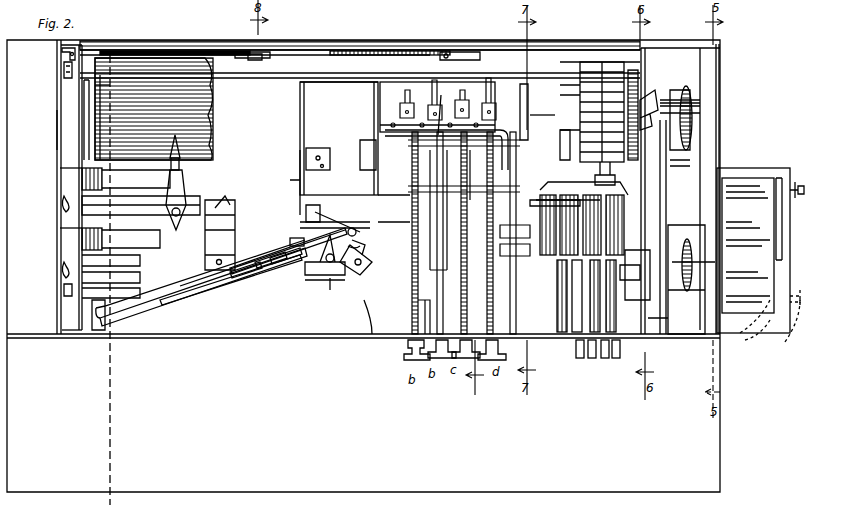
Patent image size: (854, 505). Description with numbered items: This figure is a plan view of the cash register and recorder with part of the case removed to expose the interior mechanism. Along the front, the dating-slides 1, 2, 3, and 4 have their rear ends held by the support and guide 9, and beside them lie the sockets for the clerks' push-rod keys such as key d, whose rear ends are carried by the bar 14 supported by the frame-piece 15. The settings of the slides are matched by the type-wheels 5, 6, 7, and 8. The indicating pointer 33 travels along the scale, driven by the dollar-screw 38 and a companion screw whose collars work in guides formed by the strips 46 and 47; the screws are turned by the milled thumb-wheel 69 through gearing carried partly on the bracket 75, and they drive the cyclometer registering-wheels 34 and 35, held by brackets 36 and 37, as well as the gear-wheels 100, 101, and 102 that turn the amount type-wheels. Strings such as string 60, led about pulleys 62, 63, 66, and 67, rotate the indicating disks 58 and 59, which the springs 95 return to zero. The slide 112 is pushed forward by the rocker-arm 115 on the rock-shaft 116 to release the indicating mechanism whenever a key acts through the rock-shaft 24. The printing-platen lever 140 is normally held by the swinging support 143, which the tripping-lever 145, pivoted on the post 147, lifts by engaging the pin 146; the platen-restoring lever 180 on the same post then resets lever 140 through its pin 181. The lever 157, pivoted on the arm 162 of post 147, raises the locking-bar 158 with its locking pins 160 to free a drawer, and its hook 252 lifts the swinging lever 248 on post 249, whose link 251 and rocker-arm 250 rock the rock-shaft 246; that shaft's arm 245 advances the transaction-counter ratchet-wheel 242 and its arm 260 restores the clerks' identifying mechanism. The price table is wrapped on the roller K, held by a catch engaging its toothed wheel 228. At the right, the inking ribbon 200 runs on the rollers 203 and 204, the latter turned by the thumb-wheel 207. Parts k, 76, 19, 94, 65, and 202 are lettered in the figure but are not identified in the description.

The pulley 67 is at (63, 50).
The pulley 62 is at (64, 60).
The string 60 is at (58, 127).
The roller K is at (213, 102).
The drum shaft k is at (77, 108).
The bracket 37 is at (104, 172).
The cent registering-wheels 35 is at (82, 175).
The pulley 66 is at (62, 208).
The bracket 36 is at (104, 235).
The dollar registering-wheels 34 is at (82, 240).
The strips 46 is at (130, 266).
The pulley 63 is at (63, 282).
The pointer 33 is at (178, 226).
The strips 47 is at (204, 198).
The tripping-lever 145 is at (180, 288).
The swinging lever 157 is at (220, 283).
The post 147 is at (240, 278).
The arm 162 is at (268, 262).
The platen-restoring lever 180 is at (250, 240).
The catch or hook 252 is at (296, 238).
The rocker-arm 250 is at (305, 112).
The post 249 is at (314, 150).
The support and guide 9 is at (360, 162).
The link 251 is at (298, 132).
The swinging lever 248 is at (300, 190).
The swinging support 143 is at (310, 205).
The pin 181 is at (325, 222).
The rod or bar 14 is at (388, 222).
The cam lever 76 is at (312, 277).
The pin 146 is at (330, 290).
The locking pins 160 is at (372, 262).
The platen-lever 140 is at (393, 225).
The locking-bar 158 is at (372, 340).
The rocker-arm 260 is at (382, 100).
The key d is at (510, 106).
The rock-shaft 116 is at (525, 165).
The channel bar 19 is at (480, 134).
The rocker-arm 245 is at (545, 116).
The rock-shaft 24 is at (548, 116).
The frame-piece 15 is at (508, 220).
The ratchet-wheel 242 is at (555, 192).
The gear-wheel 101 is at (612, 160).
The rocker-arm 115 is at (640, 160).
The toothed wheel 228 is at (650, 100).
The gear-wheel 100 is at (628, 170).
The milled thumb-wheel 69 is at (692, 90).
The bracket 75 is at (670, 160).
The slide 112 is at (690, 170).
The type-wheel 5 is at (556, 258).
The type-wheel 6 is at (562, 258).
The type-wheel 7 is at (575, 262).
The type-wheel 8 is at (610, 258).
The dollar-screw 38 is at (630, 282).
The plate 94 is at (640, 290).
The gear-wheel 102 is at (672, 282).
The gear 65 is at (693, 265).
The inking ribbon 200 is at (753, 250).
The roller 203 is at (785, 168).
The pin 202 is at (775, 273).
The roller 204 is at (772, 330).
The thumb-wheel 207 is at (792, 338).
The slide 1 is at (578, 342).
The slide 2 is at (582, 358).
The slide 3 is at (594, 358).
The slide 4 is at (616, 358).
The rotary disk 58 is at (225, 50).
The rotary disk 59 is at (410, 45).
The springs 95 is at (265, 58).
The rock-shaft 246 is at (348, 78).